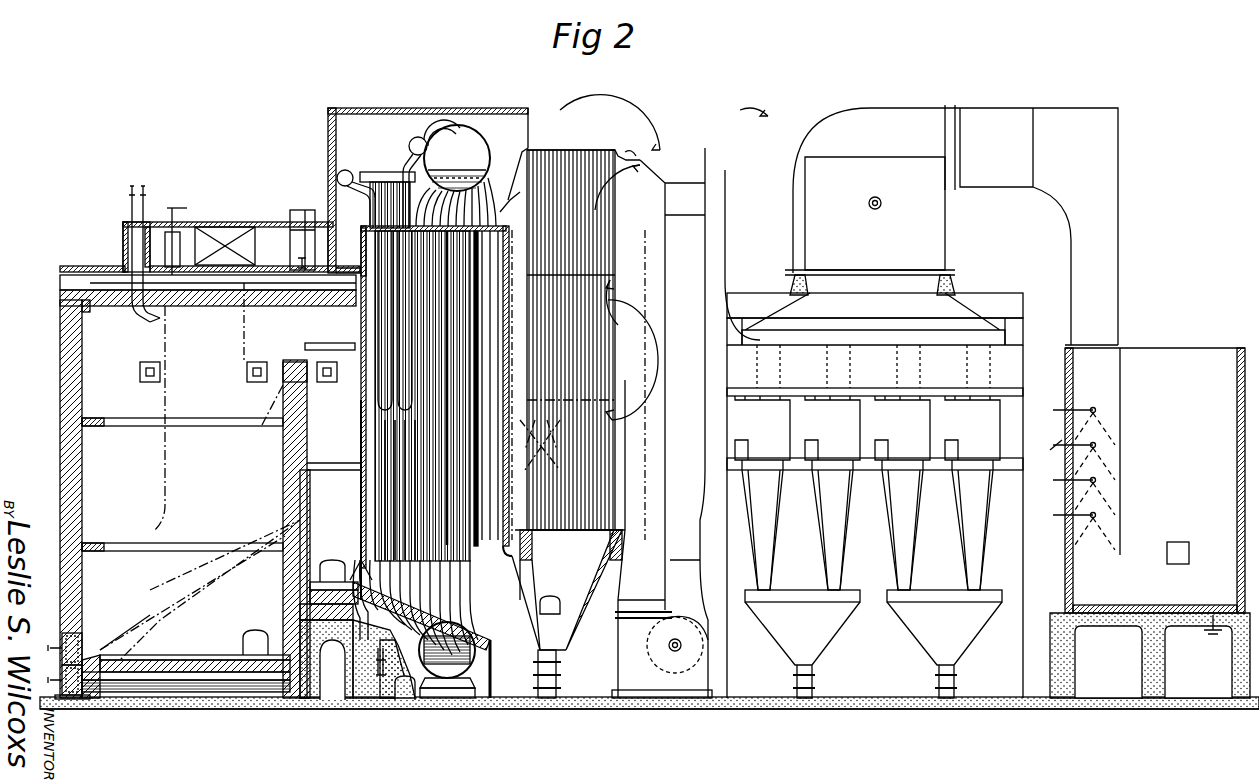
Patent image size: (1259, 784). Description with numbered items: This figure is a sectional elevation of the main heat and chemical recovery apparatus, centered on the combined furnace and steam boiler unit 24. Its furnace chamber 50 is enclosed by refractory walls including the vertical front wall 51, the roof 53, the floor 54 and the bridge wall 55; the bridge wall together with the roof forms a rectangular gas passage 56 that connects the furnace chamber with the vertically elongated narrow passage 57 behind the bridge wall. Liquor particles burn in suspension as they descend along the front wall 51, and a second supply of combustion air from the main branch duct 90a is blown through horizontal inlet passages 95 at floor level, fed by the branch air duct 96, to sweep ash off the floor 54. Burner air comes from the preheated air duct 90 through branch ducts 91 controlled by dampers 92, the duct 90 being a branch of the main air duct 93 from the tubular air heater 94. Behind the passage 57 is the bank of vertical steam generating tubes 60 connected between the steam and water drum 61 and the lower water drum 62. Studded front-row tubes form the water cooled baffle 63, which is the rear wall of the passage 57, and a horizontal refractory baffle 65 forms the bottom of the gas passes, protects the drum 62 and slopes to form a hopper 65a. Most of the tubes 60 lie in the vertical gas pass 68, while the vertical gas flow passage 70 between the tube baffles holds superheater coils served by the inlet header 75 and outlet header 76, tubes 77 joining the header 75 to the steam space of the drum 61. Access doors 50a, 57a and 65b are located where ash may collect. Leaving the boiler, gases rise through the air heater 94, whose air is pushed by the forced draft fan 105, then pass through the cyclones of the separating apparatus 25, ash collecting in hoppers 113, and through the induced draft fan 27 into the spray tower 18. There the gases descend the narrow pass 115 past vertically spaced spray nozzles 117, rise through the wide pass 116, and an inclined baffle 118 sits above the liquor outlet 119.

The spray tower 18 is at (1164, 352).
The combined furnace and steam boiler unit 24 is at (328, 166).
The separating apparatus 25 is at (903, 539).
The induced draft fan 27 is at (838, 118).
The furnace chamber 50 is at (214, 504).
The access door 50a is at (257, 630).
The front wall 51 is at (60, 384).
The roof 53 is at (224, 302).
The floor 54 is at (205, 660).
The bridge wall 55 is at (283, 455).
The gas passage 56 is at (306, 342).
The vertically elongated narrow passage 57 is at (345, 447).
The access door 57a is at (333, 562).
The steam generating tubes 60 is at (458, 340).
The steam and water drum 61 is at (482, 155).
The lower water drum 62 is at (432, 662).
The water cooled baffle 63 is at (362, 382).
The horizontally extending refractory baffle 65 is at (518, 630).
The hopper 65a is at (545, 649).
The access door 65b is at (560, 600).
The vertical gas pass 68 is at (448, 386).
The vertical gas flow passage 70 is at (390, 480).
The superheater inlet header 75 is at (414, 147).
The superheater outlet header 76 is at (346, 170).
The tubes 77 is at (458, 132).
The preheated air duct 90 is at (232, 234).
The main branch duct 90a is at (200, 598).
The branch ducts 91 is at (123, 240).
The dampers 92 is at (184, 236).
The main air duct 93 is at (275, 404).
The tubular air heater 94 is at (612, 222).
The inlet passages 95 is at (100, 655).
The branch air duct 96 is at (72, 632).
The forced draft fan 105 is at (640, 662).
The hoppers 113 is at (838, 632).
The narrow pass 115 is at (1108, 396).
The wide pass 116 is at (1190, 448).
The spray nozzles 117 is at (1064, 484).
The inclined baffle 118 is at (1235, 527).
The liquor outlet 119 is at (1205, 635).